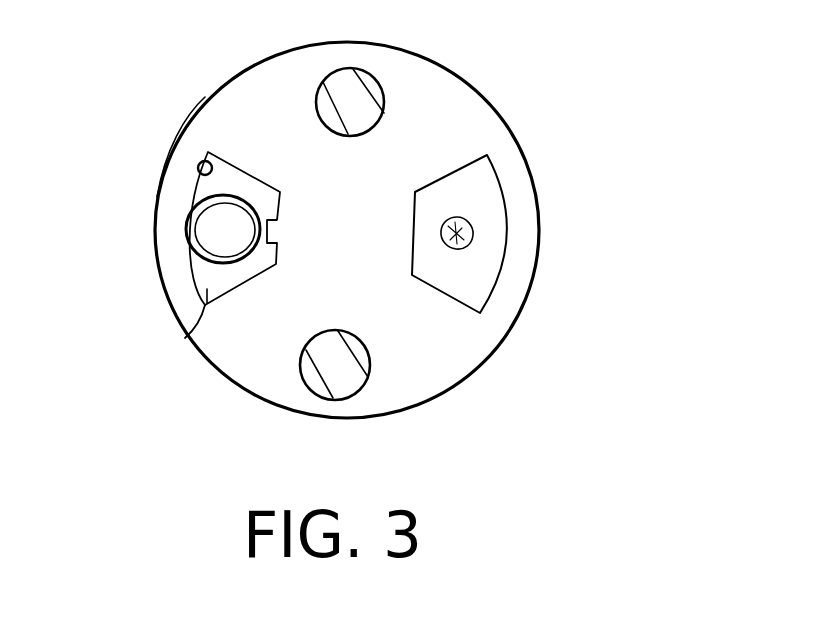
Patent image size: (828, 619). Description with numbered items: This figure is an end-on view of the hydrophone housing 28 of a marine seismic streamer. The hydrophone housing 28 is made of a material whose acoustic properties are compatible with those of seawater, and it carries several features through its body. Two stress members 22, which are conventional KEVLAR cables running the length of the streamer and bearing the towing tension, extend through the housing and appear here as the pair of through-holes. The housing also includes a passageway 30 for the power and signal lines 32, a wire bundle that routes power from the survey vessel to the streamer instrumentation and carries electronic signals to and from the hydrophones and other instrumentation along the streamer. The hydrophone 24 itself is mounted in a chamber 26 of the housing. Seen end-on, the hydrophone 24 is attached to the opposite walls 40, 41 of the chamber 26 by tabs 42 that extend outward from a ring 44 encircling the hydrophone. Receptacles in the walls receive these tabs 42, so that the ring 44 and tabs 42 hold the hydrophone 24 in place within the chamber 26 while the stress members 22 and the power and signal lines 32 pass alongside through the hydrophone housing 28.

The stress members 22 is at (352, 88).
The hydrophone 24 is at (185, 254).
The chamber 26 is at (185, 338).
The hydrophone housing 28 is at (478, 103).
The passageway 30 is at (490, 198).
The power and signal lines 32 is at (468, 247).
The wall 40 is at (272, 268).
The wall 41 is at (200, 160).
The tabs 42 is at (188, 231).
The ring 44 is at (222, 197).